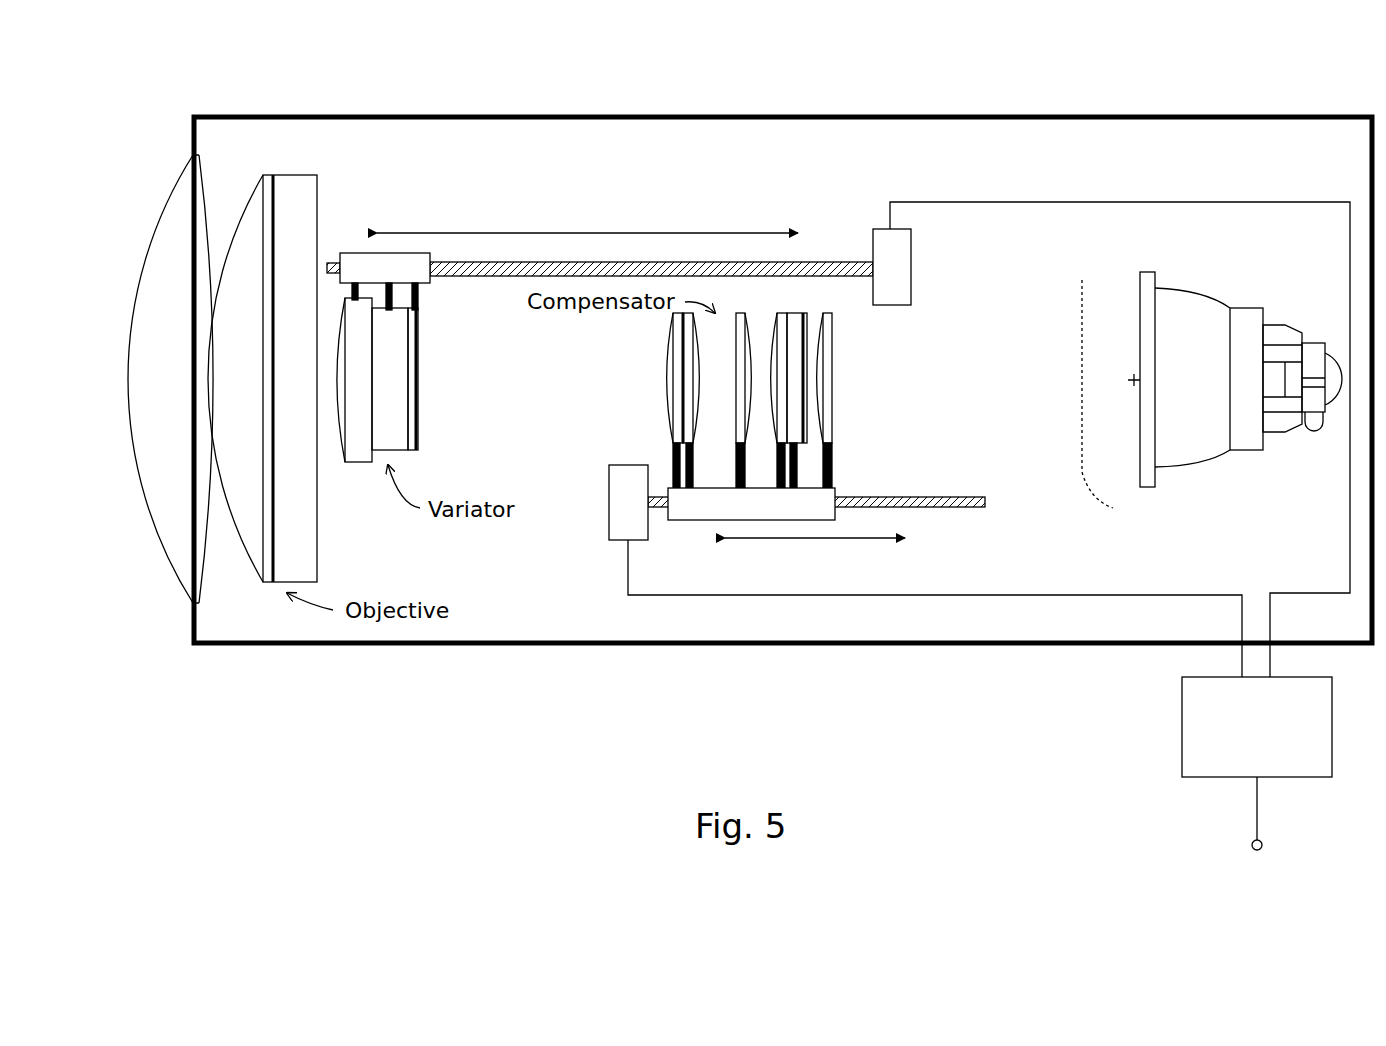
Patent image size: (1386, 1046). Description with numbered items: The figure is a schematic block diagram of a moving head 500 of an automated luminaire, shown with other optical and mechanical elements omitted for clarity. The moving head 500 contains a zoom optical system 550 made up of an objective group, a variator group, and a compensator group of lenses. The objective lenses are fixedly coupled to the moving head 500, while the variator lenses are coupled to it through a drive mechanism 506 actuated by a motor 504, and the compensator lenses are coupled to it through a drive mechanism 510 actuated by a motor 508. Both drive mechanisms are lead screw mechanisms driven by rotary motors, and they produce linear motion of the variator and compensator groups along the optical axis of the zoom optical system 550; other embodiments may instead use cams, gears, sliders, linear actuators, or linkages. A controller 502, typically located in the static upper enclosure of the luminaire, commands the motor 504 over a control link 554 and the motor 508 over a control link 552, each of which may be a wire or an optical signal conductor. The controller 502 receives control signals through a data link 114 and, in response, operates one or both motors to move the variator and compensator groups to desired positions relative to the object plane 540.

The moving head 500 is at (562, 114).
The drive mechanism 506 is at (455, 298).
The zoom optical system 550 is at (553, 202).
The drive mechanism 510 is at (865, 470).
The motor 508 is at (609, 502).
The control link 552 is at (1063, 594).
The motor 504 is at (911, 268).
The control link 554 is at (1209, 201).
The object plane 540 is at (1212, 397).
The controller 502 is at (1257, 727).
The data link 114 is at (1253, 825).